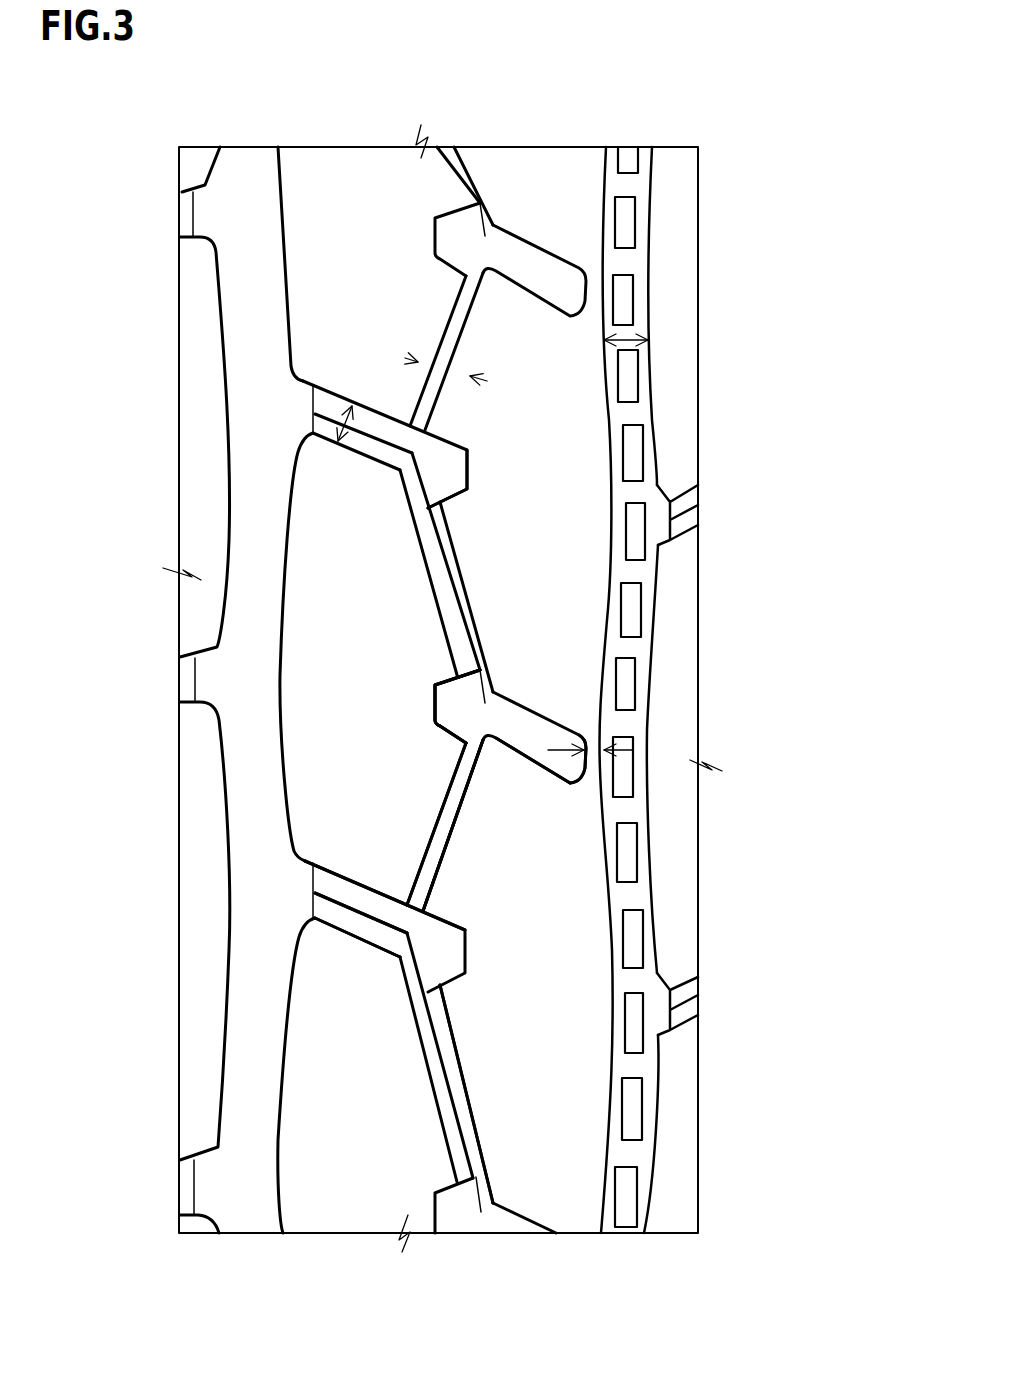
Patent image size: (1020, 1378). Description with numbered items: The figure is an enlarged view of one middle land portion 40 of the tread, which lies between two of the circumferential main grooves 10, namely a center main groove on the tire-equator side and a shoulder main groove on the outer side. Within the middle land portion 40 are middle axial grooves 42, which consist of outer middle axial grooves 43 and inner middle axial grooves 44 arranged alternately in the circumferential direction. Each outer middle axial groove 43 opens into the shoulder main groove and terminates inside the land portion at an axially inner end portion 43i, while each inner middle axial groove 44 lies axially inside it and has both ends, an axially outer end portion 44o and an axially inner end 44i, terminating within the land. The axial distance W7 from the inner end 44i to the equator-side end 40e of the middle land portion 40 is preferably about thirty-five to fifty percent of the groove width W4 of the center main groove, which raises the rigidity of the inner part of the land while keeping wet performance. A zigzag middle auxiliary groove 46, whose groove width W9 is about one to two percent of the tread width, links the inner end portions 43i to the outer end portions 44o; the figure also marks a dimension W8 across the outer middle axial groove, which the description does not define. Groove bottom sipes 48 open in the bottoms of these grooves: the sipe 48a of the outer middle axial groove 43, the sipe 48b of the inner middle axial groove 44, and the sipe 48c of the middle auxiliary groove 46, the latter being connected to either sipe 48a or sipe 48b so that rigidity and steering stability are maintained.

The main groove 10 is at (248, 185).
The middle land portion 40 is at (386, 210).
The end on tire equator side of middle land portion 40e is at (600, 820).
The middle axial groove 42 is at (63, 744).
The outer middle axial groove 43 is at (367, 440).
The axially inner end portion of outer middle axial groove 43i is at (448, 465).
The inner middle axial groove 44 is at (545, 268).
The axially outer end portion of inner middle axial groove 44o is at (455, 705).
The axially inner end of inner middle axial groove 44i is at (597, 742).
The middle auxiliary groove 46 is at (440, 340).
The groove bottom sipe 48 is at (453, 328).
The groove bottom sipe of outer middle axial groove 48a is at (440, 868).
The groove bottom sipe of inner middle axial groove 48b is at (533, 762).
The groove bottom sipe of middle auxiliary groove 48c is at (452, 862).
The groove width of center main groove W4 is at (630, 336).
The axial distance from inner end of inner middle axial groove to equator-side end o W7 is at (600, 745).
The width of lateral groove W8 is at (340, 424).
The groove width of middle auxiliary groove W9 is at (405, 360).